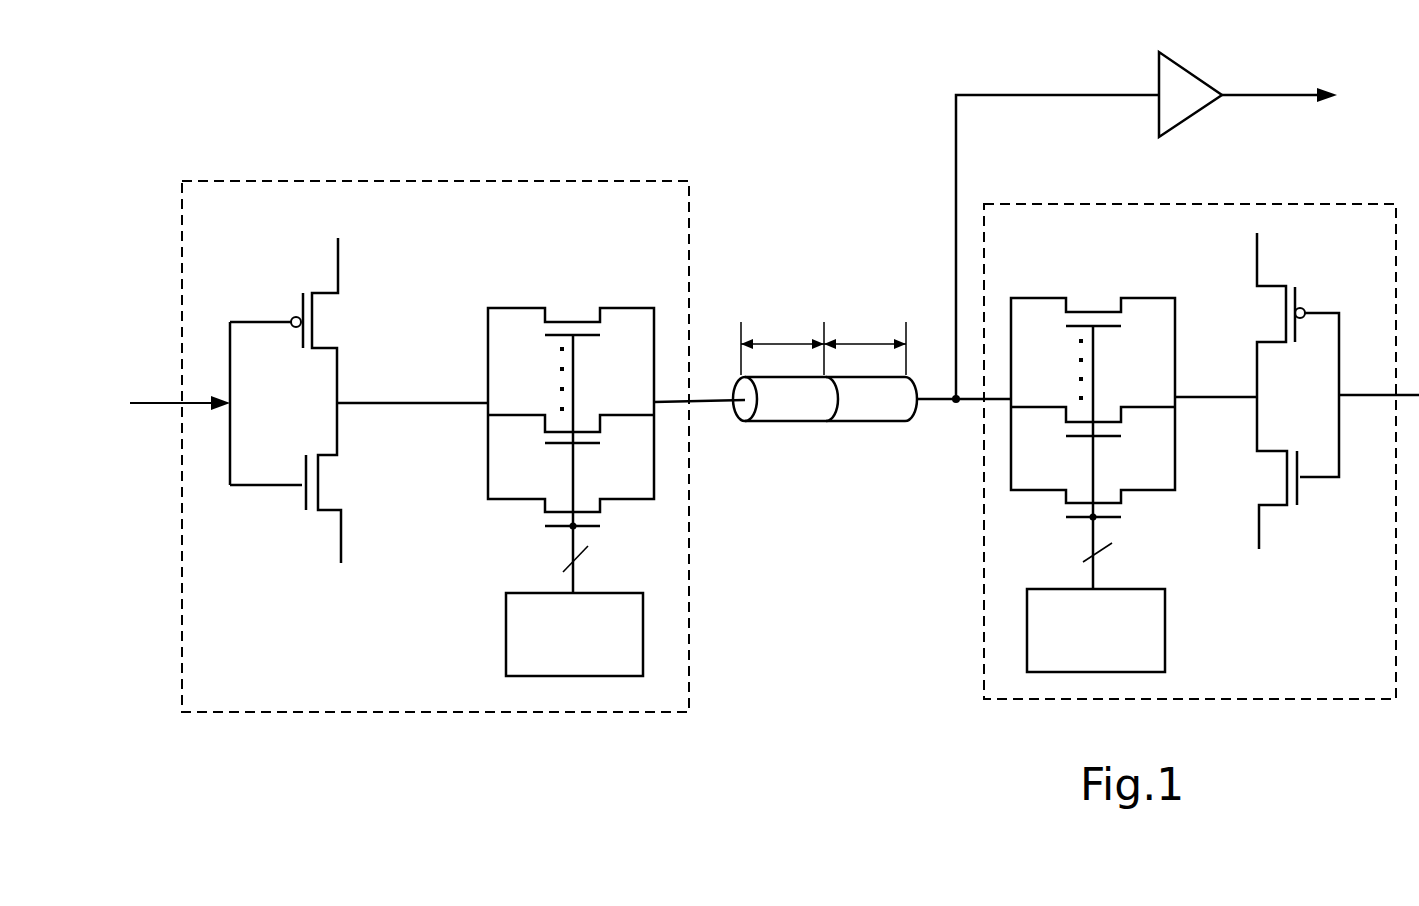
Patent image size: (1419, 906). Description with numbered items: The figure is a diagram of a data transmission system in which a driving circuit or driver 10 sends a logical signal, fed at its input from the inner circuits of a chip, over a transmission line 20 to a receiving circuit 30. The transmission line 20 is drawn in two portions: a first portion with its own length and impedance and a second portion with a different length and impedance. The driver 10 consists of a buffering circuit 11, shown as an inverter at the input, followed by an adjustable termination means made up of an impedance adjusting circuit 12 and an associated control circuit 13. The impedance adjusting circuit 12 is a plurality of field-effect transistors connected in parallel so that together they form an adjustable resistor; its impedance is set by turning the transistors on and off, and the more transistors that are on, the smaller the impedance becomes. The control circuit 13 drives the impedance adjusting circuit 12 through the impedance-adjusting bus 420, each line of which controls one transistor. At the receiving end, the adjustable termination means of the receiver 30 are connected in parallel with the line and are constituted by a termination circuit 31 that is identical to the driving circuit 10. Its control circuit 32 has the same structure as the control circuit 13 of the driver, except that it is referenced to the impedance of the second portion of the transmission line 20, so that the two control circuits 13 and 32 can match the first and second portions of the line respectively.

The driver 10 is at (490, 181).
The buffering circuit 11 is at (281, 488).
The impedance adjusting circuit 12 is at (560, 313).
The control circuit 13 is at (643, 633).
The impedance-adjusting bus 420 is at (575, 544).
The transmission line 20 is at (808, 421).
The receiving circuit 30 is at (1200, 77).
The termination circuit 31 is at (1285, 204).
The control circuit 32 is at (1040, 672).